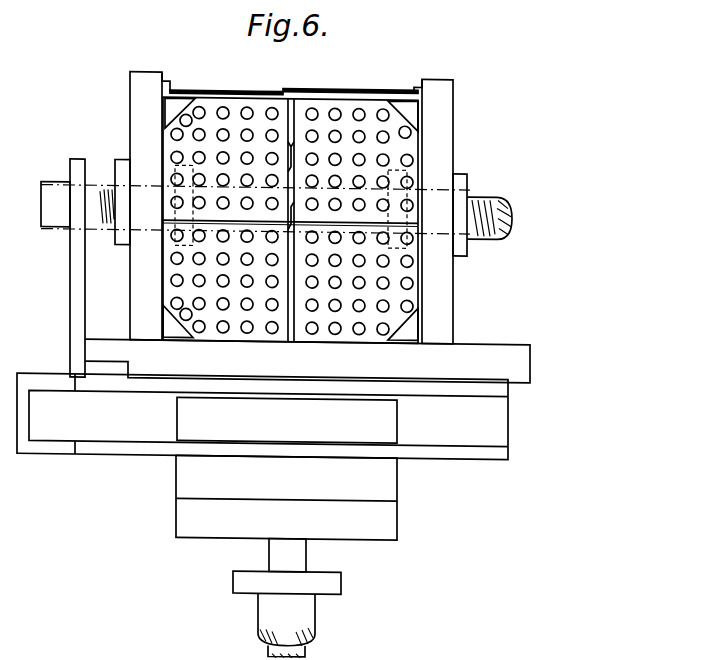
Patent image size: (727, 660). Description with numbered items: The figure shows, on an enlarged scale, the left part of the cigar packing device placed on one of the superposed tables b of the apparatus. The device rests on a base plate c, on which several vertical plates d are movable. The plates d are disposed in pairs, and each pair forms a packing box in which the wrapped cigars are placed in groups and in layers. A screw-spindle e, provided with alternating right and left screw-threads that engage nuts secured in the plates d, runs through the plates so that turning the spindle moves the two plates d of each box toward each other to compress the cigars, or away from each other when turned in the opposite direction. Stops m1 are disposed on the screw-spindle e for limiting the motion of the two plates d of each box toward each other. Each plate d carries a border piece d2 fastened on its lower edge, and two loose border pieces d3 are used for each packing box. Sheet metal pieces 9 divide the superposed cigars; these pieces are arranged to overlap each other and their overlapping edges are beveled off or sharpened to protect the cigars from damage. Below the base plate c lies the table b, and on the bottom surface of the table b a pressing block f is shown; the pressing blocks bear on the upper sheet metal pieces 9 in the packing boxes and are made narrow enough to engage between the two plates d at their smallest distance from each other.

The vertical plate d is at (148, 74).
The loose border piece d3 is at (460, 50).
The border piece d2 is at (462, 303).
The stop m1 is at (478, 150).
The sheet metal piece 9 is at (313, 218).
The screw-spindle e is at (58, 215).
The base plate c is at (480, 358).
The table b is at (479, 421).
The pressing block f is at (384, 474).